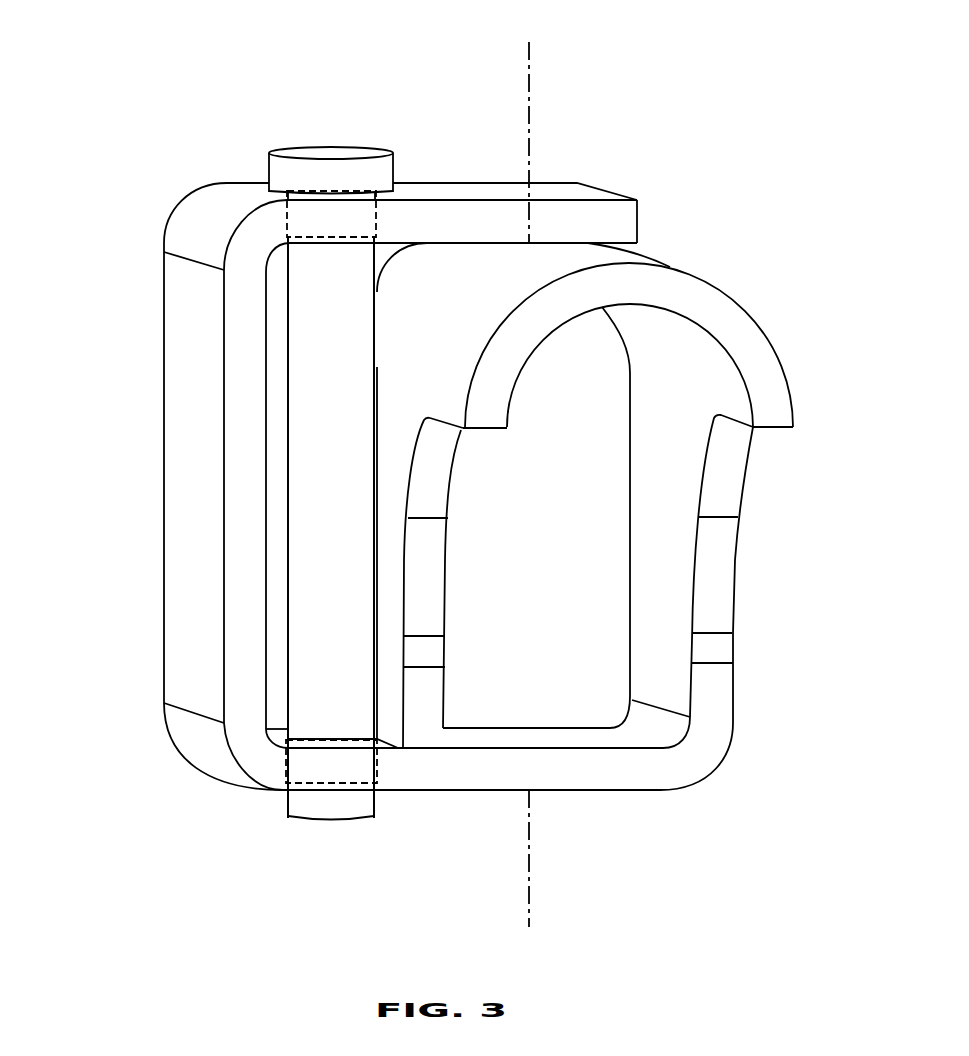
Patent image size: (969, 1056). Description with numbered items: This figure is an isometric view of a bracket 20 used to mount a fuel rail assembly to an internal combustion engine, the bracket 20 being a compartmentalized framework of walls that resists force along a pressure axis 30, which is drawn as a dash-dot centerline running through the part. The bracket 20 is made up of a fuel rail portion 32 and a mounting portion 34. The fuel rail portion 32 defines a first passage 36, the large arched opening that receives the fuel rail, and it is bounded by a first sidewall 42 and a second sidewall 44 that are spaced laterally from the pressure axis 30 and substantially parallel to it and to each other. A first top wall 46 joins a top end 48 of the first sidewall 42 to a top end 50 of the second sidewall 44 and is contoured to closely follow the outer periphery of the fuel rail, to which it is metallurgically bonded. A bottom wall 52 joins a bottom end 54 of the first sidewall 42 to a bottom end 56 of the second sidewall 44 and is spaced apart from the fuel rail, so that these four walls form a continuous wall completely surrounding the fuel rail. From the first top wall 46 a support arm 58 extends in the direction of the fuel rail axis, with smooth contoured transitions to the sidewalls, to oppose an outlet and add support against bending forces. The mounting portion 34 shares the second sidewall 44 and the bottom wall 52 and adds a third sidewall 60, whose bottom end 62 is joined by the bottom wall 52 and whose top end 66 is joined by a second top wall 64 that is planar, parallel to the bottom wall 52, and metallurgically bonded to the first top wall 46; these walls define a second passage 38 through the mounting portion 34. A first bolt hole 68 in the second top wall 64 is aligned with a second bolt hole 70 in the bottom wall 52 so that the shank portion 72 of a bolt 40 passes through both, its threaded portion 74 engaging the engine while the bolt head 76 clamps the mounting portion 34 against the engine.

The bracket 20 is at (731, 230).
The pressure axis 30 is at (532, 90).
The fuel rail portion 32 is at (656, 816).
The mounting portion 34 is at (396, 810).
The first passage 36 is at (543, 682).
The second passage 38 is at (273, 635).
The bolt 40 is at (305, 452).
The first sidewall 42 is at (713, 582).
The second sidewall 44 is at (433, 547).
The first top wall 46 is at (437, 272).
The top end of first sidewall 48 is at (717, 455).
The top end of second sidewall 50 is at (428, 470).
The bottom wall 52 is at (558, 770).
The bottom end of first sidewall 54 is at (715, 690).
The bottom end of second sidewall 56 is at (422, 715).
The support arm 58 is at (612, 252).
The third sidewall 60 is at (192, 528).
The bottom end of third sidewall 62 is at (203, 694).
The second top wall 64 is at (445, 187).
The top end of third sidewall 66 is at (192, 296).
The first bolt hole 68 is at (289, 217).
The second bolt hole 70 is at (287, 767).
The shank portion 72 is at (331, 527).
The threaded portion 74 is at (357, 812).
The bolt head 76 is at (323, 147).